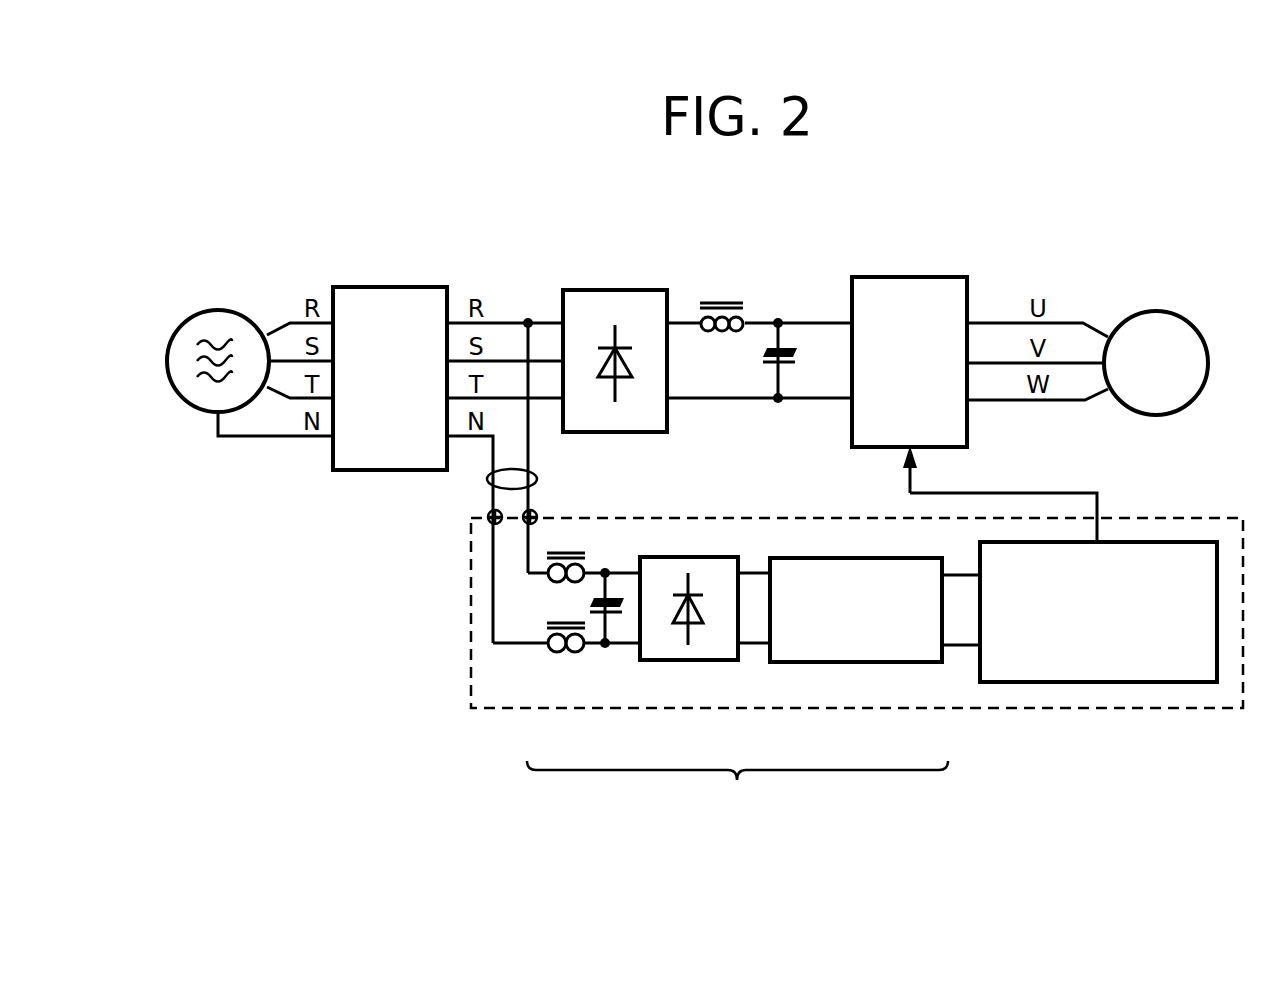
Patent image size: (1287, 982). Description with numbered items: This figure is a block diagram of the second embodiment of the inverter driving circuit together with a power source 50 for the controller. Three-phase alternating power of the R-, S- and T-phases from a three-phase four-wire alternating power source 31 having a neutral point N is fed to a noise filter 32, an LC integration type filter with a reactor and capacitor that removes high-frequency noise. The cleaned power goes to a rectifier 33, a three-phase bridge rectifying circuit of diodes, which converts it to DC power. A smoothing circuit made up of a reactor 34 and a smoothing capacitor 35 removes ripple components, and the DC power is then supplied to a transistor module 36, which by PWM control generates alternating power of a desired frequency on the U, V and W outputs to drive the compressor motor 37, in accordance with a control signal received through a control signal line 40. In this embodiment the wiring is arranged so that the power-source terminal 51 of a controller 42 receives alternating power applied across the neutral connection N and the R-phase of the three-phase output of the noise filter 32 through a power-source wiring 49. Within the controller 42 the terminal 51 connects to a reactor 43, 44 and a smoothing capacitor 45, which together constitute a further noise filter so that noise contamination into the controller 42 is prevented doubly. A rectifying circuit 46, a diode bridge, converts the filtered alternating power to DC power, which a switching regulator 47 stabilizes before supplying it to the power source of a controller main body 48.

The three-phase alternating power source 31 is at (220, 309).
The noise filter 32 is at (400, 287).
The rectifier 33 is at (622, 290).
The reactor 34 is at (732, 300).
The smoothing capacitor 35 is at (763, 357).
The transistor module 36 is at (922, 277).
The compressor motor (CM) 37 is at (1157, 311).
The control signal line 40 is at (912, 477).
The controller 42 is at (1178, 518).
The reactor 43 is at (565, 551).
The reactor 44 is at (570, 658).
The smoothing capacitor 45 is at (590, 604).
The rectifying circuit 46 is at (688, 557).
The switching regulator 47 is at (820, 558).
The controller main body 48 is at (1092, 682).
The power-source wiring 49 is at (487, 480).
The power source 50 is at (737, 792).
The power-source terminal 51 is at (525, 523).